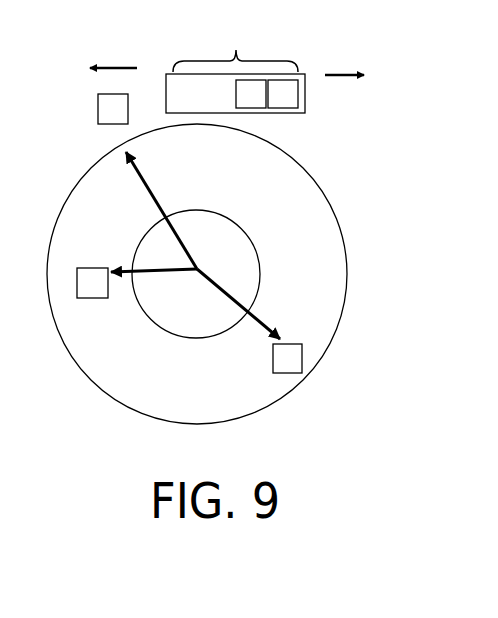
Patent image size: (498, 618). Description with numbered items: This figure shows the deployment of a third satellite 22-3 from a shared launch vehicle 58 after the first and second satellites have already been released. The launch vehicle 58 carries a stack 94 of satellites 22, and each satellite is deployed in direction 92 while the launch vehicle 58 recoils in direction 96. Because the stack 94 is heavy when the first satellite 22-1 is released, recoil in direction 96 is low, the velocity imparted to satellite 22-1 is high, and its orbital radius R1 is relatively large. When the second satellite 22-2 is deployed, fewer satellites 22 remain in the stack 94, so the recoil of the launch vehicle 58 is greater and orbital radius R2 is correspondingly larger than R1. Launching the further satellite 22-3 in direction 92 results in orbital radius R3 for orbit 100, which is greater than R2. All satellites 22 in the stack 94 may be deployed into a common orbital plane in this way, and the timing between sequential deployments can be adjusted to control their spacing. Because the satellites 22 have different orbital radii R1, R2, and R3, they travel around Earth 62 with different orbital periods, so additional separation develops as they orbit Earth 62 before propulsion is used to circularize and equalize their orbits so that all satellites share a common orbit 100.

The orbit 100 is at (342, 235).
The Earth 62 is at (183, 331).
The orbital radius r1 R1 is at (154, 286).
The orbital radius r2 R2 is at (238, 304).
The orbital radius r3 R3 is at (159, 210).
The satellites 22 is at (288, 102).
The first satellite 22-1 is at (108, 298).
The second satellite 22-2 is at (302, 373).
The third satellite 22-3 is at (97, 110).
The launch vehicle 58 is at (305, 82).
The stack 94 is at (235, 45).
The direction 92 is at (113, 52).
The direction 96 is at (344, 57).